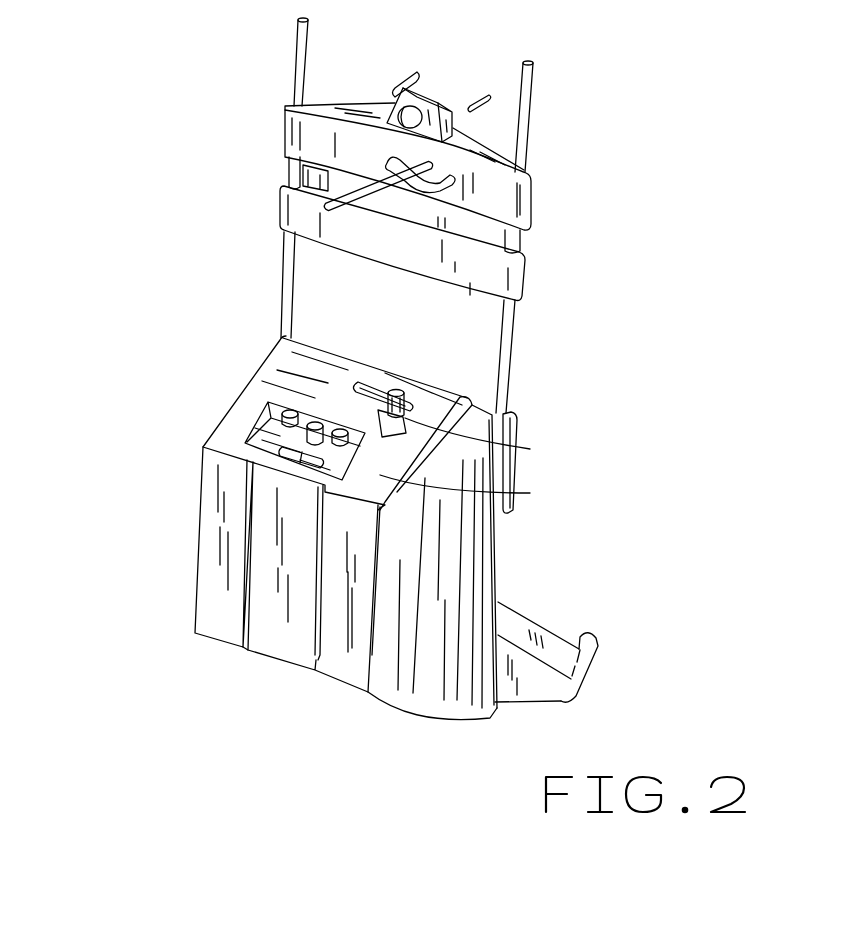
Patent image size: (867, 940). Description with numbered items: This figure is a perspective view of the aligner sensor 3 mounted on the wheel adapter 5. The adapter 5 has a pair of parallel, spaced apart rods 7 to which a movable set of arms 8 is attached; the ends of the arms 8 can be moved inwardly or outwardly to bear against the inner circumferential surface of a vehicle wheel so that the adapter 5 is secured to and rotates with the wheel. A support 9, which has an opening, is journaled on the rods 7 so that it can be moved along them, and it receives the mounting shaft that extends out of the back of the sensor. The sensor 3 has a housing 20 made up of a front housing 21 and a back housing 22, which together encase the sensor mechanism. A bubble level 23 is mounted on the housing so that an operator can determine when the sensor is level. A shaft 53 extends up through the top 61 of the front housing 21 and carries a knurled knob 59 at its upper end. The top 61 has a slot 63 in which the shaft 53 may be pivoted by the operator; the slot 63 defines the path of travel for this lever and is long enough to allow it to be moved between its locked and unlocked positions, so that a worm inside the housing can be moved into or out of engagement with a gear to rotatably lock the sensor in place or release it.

The aligner sensor 3 is at (330, 405).
The wheel adapter 5 is at (540, 205).
The rods 7 is at (295, 270).
The arms 8 is at (307, 50).
The support 9 is at (514, 412).
The housing 20 is at (200, 518).
The front housing 21 is at (222, 598).
The back housing 22 is at (490, 700).
The bubble level 23 is at (530, 493).
The shaft 53 is at (530, 449).
The knurled knob 59 is at (404, 388).
The top 61 is at (243, 436).
The slot 63 is at (363, 382).